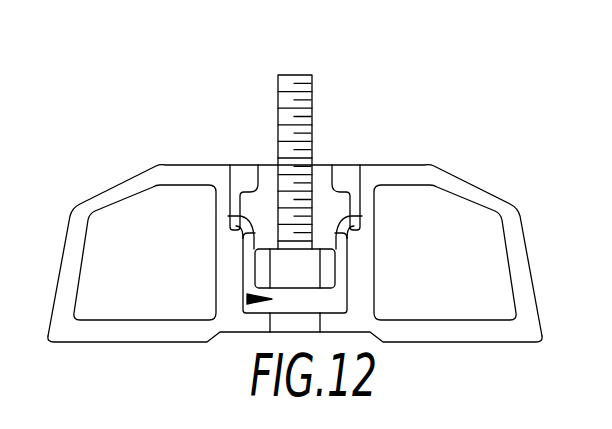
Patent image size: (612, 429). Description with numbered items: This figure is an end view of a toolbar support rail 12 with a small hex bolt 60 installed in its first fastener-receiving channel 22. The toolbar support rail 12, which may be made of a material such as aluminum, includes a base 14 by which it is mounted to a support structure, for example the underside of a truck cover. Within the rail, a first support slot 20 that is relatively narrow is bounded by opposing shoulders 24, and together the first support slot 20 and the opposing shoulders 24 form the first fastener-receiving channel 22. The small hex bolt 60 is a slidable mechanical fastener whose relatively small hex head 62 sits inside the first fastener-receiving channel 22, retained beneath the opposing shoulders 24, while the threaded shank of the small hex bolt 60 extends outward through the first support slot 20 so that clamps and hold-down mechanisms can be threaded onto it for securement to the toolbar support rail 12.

The toolbar support rail 12 is at (101, 200).
The base 14 is at (140, 343).
The first support slot 20 is at (247, 299).
The first fastener-receiving channel 22 is at (250, 268).
The opposing shoulders 24 is at (238, 217).
The small hex bolt 60 is at (313, 96).
The small hex head 62 is at (335, 272).